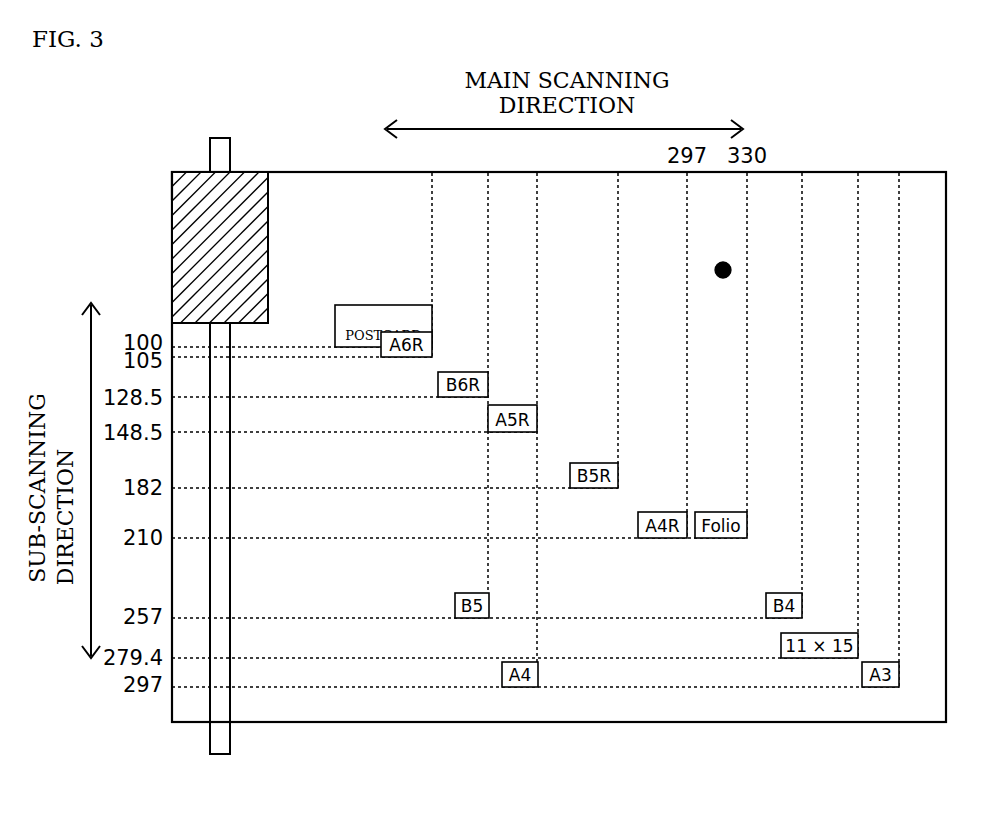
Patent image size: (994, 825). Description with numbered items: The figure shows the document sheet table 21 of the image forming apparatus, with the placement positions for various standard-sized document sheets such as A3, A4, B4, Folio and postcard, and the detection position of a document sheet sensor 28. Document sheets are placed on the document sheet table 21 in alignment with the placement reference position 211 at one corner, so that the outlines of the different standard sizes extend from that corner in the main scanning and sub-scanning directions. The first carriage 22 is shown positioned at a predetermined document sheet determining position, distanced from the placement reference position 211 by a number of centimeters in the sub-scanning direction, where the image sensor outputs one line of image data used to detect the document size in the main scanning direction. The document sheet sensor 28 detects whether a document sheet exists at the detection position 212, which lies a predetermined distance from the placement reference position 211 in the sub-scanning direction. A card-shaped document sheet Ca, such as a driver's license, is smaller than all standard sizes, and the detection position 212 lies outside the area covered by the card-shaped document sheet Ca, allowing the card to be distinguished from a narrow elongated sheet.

The document sheet table 21 is at (589, 722).
The first carriage 22 is at (230, 738).
The placement reference position 211 is at (168, 172).
The detection position 212 is at (731, 270).
The document sheet sensor 28 is at (812, 271).
The card-shaped document sheet Ca is at (268, 243).